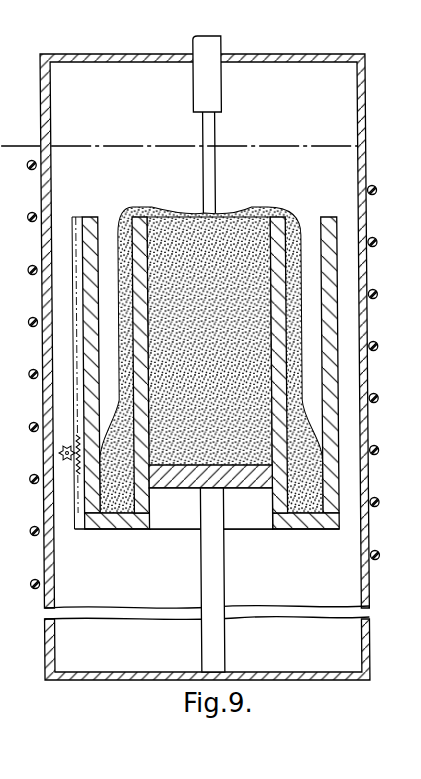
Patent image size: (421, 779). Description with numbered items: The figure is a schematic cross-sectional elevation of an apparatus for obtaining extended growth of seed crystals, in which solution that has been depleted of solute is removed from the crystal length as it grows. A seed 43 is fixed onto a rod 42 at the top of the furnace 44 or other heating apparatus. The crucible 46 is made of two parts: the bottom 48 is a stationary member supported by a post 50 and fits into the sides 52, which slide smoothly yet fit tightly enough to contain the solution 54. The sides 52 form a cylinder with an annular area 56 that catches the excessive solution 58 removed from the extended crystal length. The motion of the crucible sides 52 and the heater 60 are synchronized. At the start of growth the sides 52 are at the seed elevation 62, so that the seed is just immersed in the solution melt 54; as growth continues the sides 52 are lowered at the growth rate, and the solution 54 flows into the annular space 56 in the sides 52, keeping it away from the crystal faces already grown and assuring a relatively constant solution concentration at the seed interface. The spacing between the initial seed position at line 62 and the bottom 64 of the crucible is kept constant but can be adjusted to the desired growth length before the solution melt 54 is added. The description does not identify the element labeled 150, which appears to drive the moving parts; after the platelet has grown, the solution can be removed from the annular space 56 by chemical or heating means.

The rod 42 is at (216, 47).
The seed 43 is at (212, 125).
The furnace 44 is at (366, 97).
The crucible 46 is at (238, 529).
The bottom 48 is at (251, 472).
The post 50 is at (204, 562).
The sides 52 is at (276, 340).
The solution 54 is at (179, 212).
The annular area 56 is at (308, 240).
The excessive solution 58 is at (319, 529).
The heater 60 is at (376, 188).
The seed elevation 62 is at (96, 145).
The bottom of the crucible 64 is at (178, 457).
The gear 150 is at (0, 463).